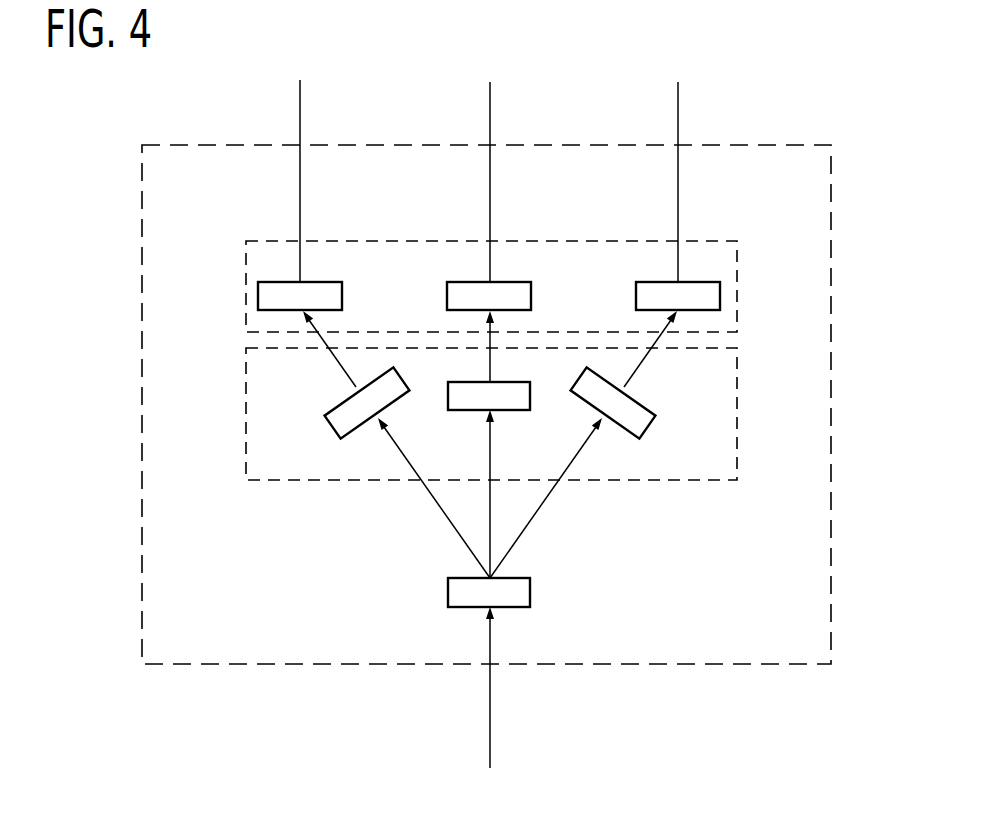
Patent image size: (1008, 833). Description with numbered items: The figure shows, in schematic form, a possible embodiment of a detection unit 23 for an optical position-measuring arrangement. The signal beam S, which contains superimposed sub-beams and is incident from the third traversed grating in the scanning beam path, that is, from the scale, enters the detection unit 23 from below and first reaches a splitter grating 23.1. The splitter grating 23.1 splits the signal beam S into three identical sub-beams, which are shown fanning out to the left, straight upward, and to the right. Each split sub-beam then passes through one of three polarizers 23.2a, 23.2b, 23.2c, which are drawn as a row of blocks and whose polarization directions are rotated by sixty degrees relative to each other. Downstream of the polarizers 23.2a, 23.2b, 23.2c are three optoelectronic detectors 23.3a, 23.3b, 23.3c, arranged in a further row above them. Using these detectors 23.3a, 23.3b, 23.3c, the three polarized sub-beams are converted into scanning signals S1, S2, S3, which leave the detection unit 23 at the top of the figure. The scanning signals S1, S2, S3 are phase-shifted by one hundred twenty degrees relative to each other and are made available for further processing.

The detection unit 23 is at (831, 283).
The splitter grating 23.1 is at (519, 592).
The polarizer 23.2a is at (345, 420).
The polarizer 23.2b is at (462, 397).
The polarizer 23.2c is at (632, 420).
The optoelectronic detector 23.3a is at (321, 294).
The optoelectronic detector 23.3b is at (513, 294).
The optoelectronic detector 23.3c is at (702, 294).
The signal beam S is at (490, 722).
The scanning signal S1 is at (301, 163).
The scanning signal S2 is at (490, 162).
The scanning signal S3 is at (679, 162).